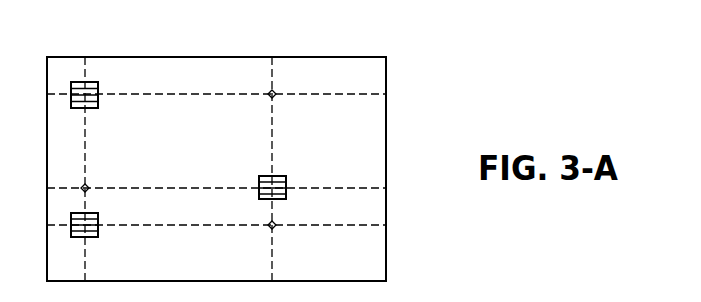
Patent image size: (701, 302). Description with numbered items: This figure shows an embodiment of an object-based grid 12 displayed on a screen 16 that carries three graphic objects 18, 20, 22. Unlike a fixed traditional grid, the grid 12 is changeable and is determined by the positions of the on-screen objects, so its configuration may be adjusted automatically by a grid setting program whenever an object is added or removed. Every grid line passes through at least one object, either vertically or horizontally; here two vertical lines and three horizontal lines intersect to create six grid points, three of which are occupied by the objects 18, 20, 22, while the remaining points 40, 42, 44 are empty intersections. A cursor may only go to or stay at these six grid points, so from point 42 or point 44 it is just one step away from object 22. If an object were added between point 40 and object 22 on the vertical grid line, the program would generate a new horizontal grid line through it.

The grid 12 is at (292, 32).
The screen 16 is at (403, 92).
The graphic object 18 is at (146, 83).
The graphic object 20 is at (149, 242).
The graphic object 22 is at (338, 175).
The grid point 40 is at (289, 109).
The grid point 42 is at (103, 172).
The grid point 44 is at (287, 240).